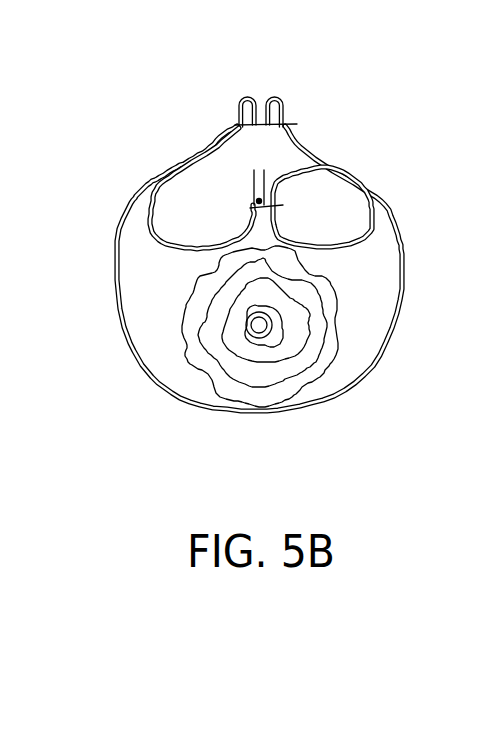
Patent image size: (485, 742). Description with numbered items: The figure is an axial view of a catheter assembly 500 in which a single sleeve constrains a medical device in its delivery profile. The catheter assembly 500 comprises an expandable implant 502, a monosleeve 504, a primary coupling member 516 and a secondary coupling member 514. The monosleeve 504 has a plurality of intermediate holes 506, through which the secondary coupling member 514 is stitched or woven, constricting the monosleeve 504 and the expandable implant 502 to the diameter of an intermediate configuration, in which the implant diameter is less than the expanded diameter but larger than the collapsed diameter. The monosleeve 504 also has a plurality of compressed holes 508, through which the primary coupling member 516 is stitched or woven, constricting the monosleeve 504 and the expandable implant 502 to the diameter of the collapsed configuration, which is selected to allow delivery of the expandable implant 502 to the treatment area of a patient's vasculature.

The catheter assembly 500 is at (147, 121).
The expandable implant 502 is at (340, 348).
The monosleeve 504 is at (397, 189).
The intermediate holes 506 is at (256, 201).
The compressed holes 508 is at (236, 124).
The secondary coupling member 514 is at (327, 167).
The primary coupling member 516 is at (291, 121).